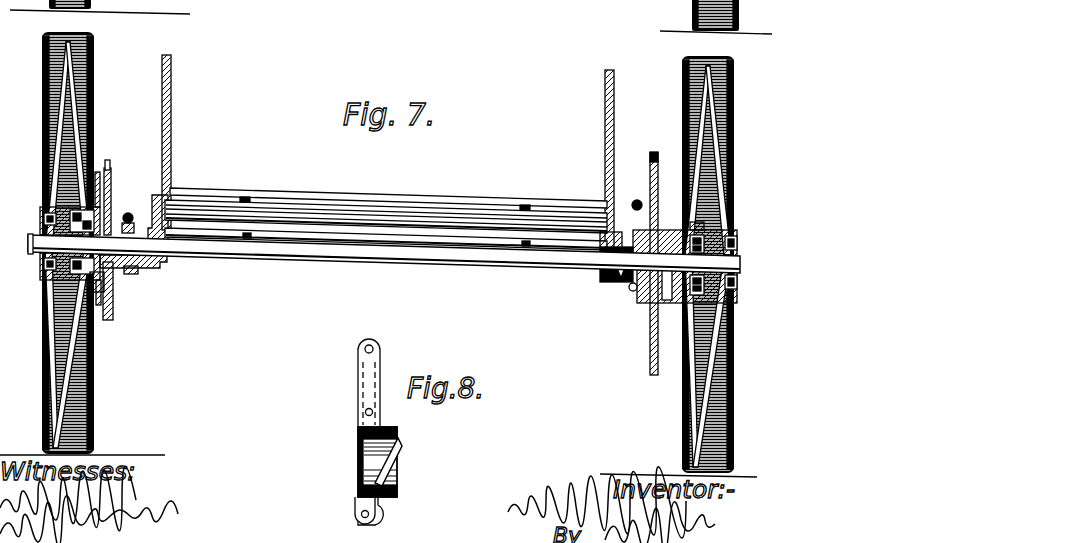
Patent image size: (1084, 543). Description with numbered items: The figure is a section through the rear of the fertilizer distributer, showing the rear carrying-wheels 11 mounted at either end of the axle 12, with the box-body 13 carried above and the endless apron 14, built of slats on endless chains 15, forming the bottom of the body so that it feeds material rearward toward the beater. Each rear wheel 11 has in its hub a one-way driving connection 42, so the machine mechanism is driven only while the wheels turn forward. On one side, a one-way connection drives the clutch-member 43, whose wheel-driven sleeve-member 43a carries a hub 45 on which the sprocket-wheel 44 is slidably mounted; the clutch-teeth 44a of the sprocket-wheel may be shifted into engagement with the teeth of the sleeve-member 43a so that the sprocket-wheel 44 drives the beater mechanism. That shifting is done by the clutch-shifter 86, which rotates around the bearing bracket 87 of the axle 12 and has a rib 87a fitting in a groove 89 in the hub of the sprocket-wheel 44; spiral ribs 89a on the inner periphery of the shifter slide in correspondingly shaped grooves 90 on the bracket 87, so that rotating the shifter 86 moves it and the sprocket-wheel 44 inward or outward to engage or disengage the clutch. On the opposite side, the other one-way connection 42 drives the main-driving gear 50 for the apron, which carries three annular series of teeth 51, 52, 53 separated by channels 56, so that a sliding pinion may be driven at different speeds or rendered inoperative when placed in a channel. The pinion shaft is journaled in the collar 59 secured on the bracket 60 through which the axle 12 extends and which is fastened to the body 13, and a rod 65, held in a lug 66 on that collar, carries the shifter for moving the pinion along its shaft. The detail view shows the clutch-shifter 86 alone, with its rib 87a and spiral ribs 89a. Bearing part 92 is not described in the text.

In FIG. 7, the rear wheels 11 is at (93, 60).
In FIG. 7, the axle 12 is at (423, 262).
In FIG. 7, the box-body 13 is at (171, 130).
In FIG. 7, the endless apron 14 is at (366, 198).
In FIG. 7, the endless chains 15 is at (250, 202).
In FIG. 7, the one-way driving connection 42 is at (68, 280).
In FIG. 7, the clutch-member 43 is at (667, 300).
In FIG. 7, the sleeve-member 43a is at (697, 230).
In FIG. 7, the sprocket-wheel 44 is at (650, 352).
In FIG. 7, the clutch-teeth 44a is at (658, 232).
In FIG. 7, the hub 45 is at (640, 288).
In FIG. 7, the main-driving gear 50 is at (113, 302).
In FIG. 7, the annular series of teeth 51 is at (104, 280).
In FIG. 7, the annular series of teeth 52 is at (111, 192).
In FIG. 7, the annular series of teeth 53 is at (110, 165).
In FIG. 7, the channels 56 is at (98, 205).
In FIG. 7, the collar 59 is at (138, 276).
In FIG. 7, the bracket 60 is at (150, 267).
In FIG. 7, the rod 65 is at (168, 224).
In FIG. 7, the lug 66 is at (140, 208).
In FIG. 8, the clutch-shifter 86 is at (361, 391).
In FIG. 7, the bearing bracket 87 is at (606, 283).
In FIG. 7, the rib 87a is at (639, 213).
In FIG. 8, the rib 87a is at (358, 477).
In FIG. 7, the groove 89 is at (624, 283).
In FIG. 8, the spiral ribs 89a is at (396, 460).
In FIG. 7, the grooves 90 is at (630, 290).
In FIG. 7, the hub 92 is at (694, 303).